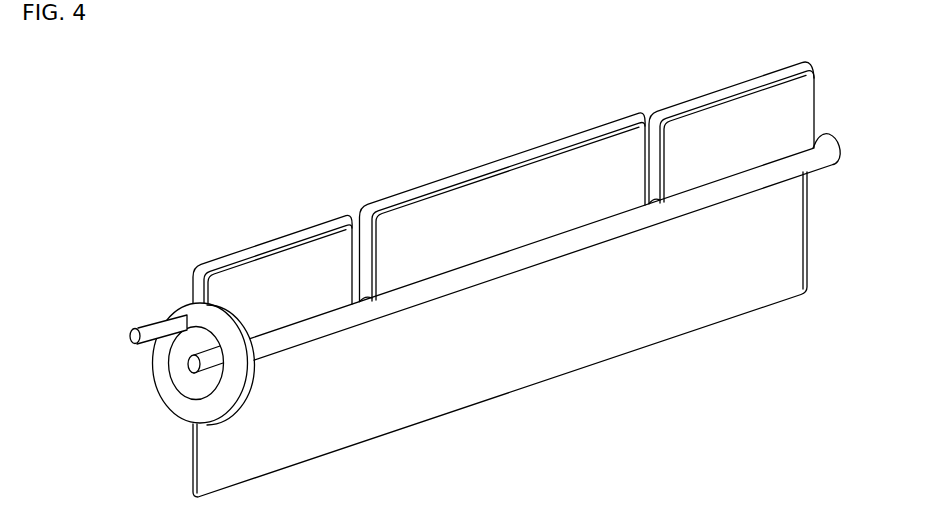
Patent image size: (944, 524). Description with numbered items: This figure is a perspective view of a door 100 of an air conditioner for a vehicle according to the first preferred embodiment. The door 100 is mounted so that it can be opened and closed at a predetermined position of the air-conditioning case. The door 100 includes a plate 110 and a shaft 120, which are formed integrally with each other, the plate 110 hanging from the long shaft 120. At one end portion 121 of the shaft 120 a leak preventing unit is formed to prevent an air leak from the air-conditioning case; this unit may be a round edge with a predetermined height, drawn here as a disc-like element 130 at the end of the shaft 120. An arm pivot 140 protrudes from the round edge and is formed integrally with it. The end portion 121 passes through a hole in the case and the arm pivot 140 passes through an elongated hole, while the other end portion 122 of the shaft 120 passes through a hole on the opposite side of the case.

The door 100 is at (213, 153).
The plate 110 is at (452, 212).
The shaft 120 is at (412, 298).
The end portion 121 is at (190, 365).
The other end portion 122 is at (826, 152).
The disc 130 is at (188, 306).
The arm pivot 140 is at (138, 331).